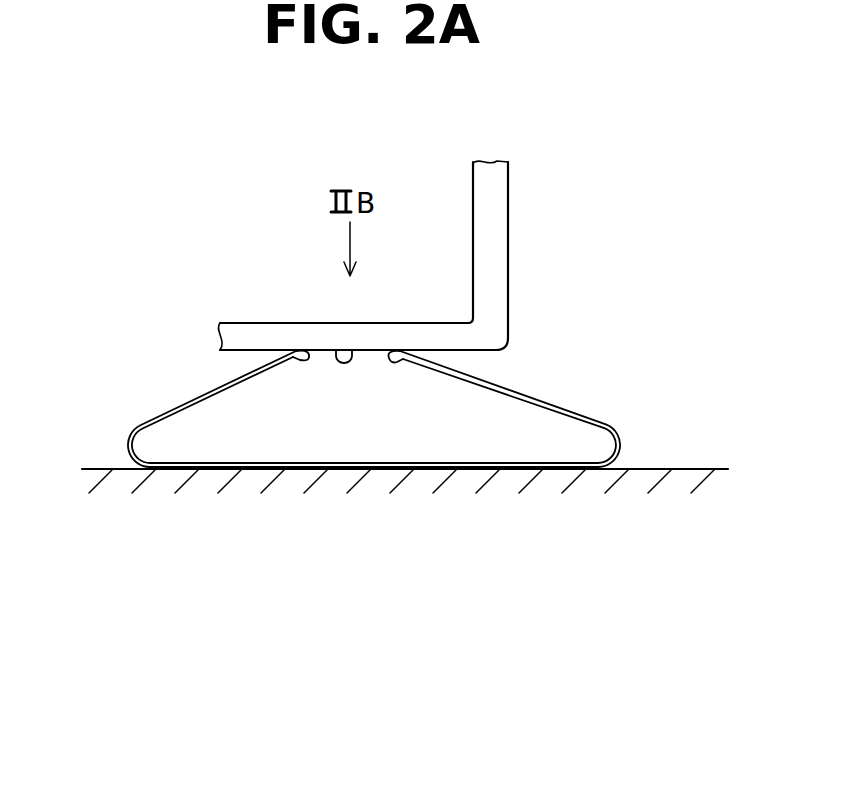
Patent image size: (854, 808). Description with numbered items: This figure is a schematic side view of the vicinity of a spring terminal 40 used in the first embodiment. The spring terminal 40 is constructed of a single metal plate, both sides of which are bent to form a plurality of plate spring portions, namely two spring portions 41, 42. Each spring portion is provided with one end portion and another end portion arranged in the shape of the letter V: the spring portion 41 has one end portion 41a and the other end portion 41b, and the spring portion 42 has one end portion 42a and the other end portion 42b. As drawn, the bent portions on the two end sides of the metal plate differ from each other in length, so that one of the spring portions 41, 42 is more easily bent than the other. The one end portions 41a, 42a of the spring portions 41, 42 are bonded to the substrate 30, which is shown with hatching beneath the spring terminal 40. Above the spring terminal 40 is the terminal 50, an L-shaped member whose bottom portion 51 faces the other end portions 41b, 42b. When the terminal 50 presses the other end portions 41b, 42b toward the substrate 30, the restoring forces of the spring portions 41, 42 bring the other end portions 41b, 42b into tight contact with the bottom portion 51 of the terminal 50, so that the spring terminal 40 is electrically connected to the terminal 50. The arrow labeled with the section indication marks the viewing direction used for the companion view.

The substrate 30 is at (637, 485).
The spring terminal 40 is at (330, 463).
The spring portion 41 is at (520, 388).
The one end portion 41a is at (525, 463).
The other end portion 41b is at (403, 366).
The spring portion 42 is at (196, 396).
The one end portion 42a is at (228, 463).
The other end portion 42b is at (291, 366).
The terminal 50 is at (508, 252).
The bottom portion 51 is at (352, 352).